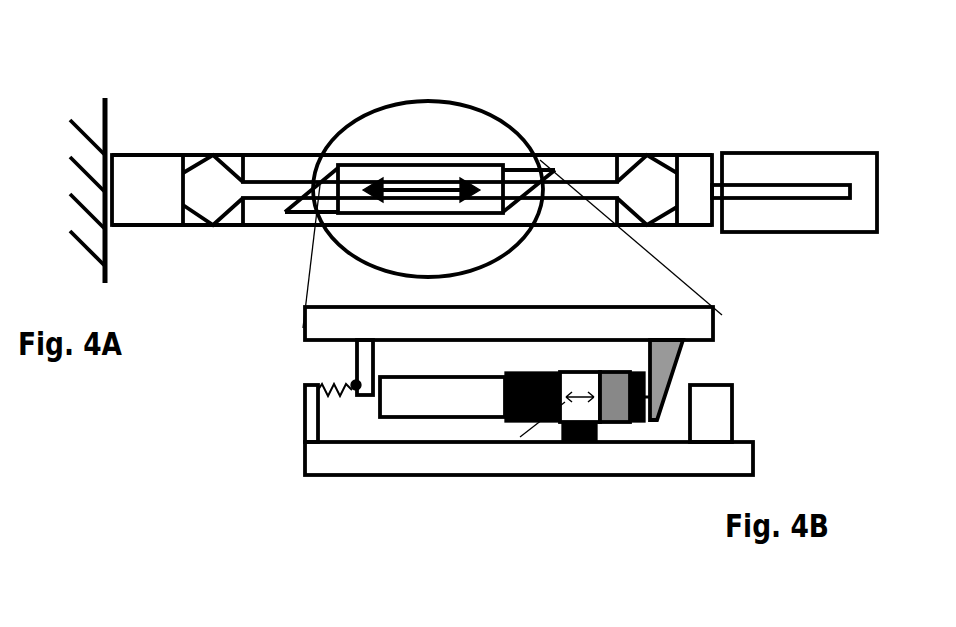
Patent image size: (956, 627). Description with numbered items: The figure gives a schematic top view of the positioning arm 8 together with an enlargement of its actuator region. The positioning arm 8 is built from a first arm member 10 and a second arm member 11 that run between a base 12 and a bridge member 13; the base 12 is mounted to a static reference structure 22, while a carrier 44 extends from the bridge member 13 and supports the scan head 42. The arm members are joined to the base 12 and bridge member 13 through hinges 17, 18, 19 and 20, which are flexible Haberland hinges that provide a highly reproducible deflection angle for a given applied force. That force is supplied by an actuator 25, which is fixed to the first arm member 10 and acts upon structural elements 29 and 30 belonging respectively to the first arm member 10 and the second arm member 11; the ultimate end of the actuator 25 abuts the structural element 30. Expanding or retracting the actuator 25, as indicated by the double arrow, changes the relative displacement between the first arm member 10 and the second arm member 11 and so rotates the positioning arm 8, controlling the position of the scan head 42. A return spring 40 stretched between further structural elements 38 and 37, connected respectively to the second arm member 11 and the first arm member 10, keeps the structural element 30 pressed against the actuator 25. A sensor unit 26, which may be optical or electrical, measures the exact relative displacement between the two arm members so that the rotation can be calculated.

In FIG. 4A, the positioning arm 8 is at (318, 98).
In FIG. 4A, the first arm member 10 is at (272, 228).
In FIG. 4B, the first arm member 10 is at (627, 465).
In FIG. 4A, the second arm member 11 is at (283, 152).
In FIG. 4B, the second arm member 11 is at (570, 316).
In FIG. 4A, the base 12 is at (160, 152).
In FIG. 4A, the bridge member 13 is at (690, 152).
In FIG. 4A, the hinge 17 is at (212, 228).
In FIG. 4A, the hinge 18 is at (647, 230).
In FIG. 4A, the hinge 19 is at (643, 155).
In FIG. 4A, the hinge 20 is at (213, 155).
In FIG. 4A, the static reference structure 22 is at (110, 108).
In FIG. 4A, the actuator 25 is at (420, 165).
In FIG. 4B, the actuator 25 is at (437, 428).
In FIG. 4B, the sensor unit 26 is at (725, 415).
In FIG. 4A, the structural element 29 is at (333, 180).
In FIG. 4B, the structural element 29 is at (560, 432).
In FIG. 4A, the structural element 30 is at (510, 178).
In FIG. 4B, the structural element 30 is at (680, 360).
In FIG. 4B, the structural element 37 is at (305, 395).
In FIG. 4B, the structural element 38 is at (357, 353).
In FIG. 4B, the return spring 40 is at (337, 395).
In FIG. 4A, the scan head 42 is at (782, 150).
In FIG. 4A, the carrier 44 is at (832, 185).